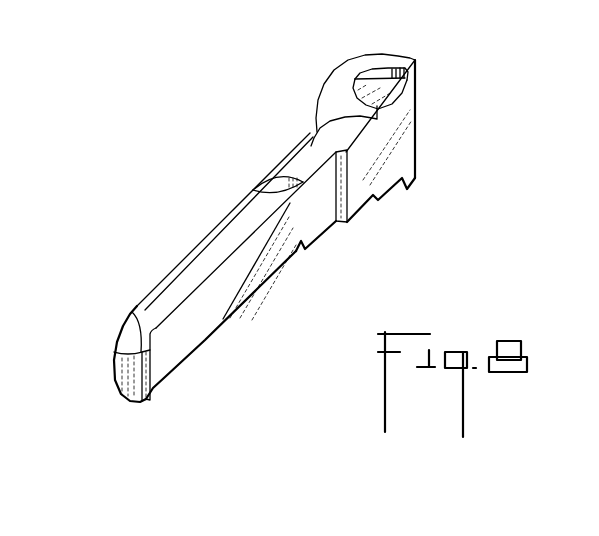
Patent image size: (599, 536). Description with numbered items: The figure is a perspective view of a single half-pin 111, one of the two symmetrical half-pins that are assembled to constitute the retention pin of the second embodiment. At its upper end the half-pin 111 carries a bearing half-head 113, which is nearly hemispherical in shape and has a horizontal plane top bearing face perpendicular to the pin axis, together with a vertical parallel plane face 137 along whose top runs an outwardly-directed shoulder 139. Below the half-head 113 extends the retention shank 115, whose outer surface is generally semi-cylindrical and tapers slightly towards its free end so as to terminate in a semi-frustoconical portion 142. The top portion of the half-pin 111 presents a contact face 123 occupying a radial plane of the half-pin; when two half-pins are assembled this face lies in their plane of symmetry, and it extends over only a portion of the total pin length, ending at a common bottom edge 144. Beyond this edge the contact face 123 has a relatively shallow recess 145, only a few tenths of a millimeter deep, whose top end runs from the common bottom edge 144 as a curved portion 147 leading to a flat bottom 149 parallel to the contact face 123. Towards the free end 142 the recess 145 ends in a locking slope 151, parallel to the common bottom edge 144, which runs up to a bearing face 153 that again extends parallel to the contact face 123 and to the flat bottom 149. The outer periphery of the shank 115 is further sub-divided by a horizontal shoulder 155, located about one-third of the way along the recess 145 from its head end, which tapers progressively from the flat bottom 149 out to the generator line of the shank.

The half-pin 111 is at (261, 230).
The bearing half-head 113 is at (335, 93).
The retention shank 115 is at (282, 162).
The contact face 123 is at (406, 142).
The vertical parallel plane face 137 is at (357, 80).
The outwardly-directed shoulder 139 is at (398, 72).
The semi-frustoconical portion 142 is at (120, 336).
The common bottom edge 144 is at (348, 200).
The recess 145 is at (203, 320).
The curved portion 147 is at (335, 168).
The flat bottom 149 is at (276, 250).
The locking slope 151 is at (136, 320).
The bearing face 153 is at (147, 400).
The horizontal shoulder 155 is at (256, 189).